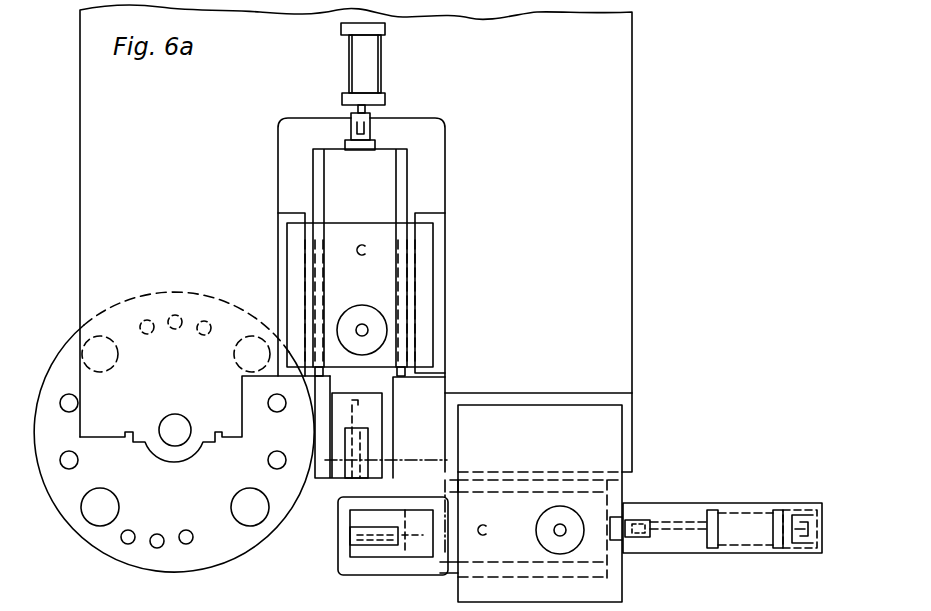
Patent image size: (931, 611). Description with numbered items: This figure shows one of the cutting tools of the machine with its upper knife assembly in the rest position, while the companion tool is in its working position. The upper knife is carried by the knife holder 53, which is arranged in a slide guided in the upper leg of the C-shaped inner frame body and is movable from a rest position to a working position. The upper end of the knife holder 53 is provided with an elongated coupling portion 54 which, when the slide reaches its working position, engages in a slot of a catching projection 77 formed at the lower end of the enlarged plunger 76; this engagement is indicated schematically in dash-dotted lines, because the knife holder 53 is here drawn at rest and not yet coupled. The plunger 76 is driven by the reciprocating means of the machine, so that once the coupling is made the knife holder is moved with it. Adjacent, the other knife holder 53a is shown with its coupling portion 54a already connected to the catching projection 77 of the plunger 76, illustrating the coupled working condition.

The knife holder 53 is at (415, 547).
The coupling portion 54 is at (363, 545).
The knife holder 53a is at (340, 448).
The coupling portion 54a is at (348, 476).
The enlarged plunger 76 is at (419, 469).
The catching projection 77 is at (397, 503).